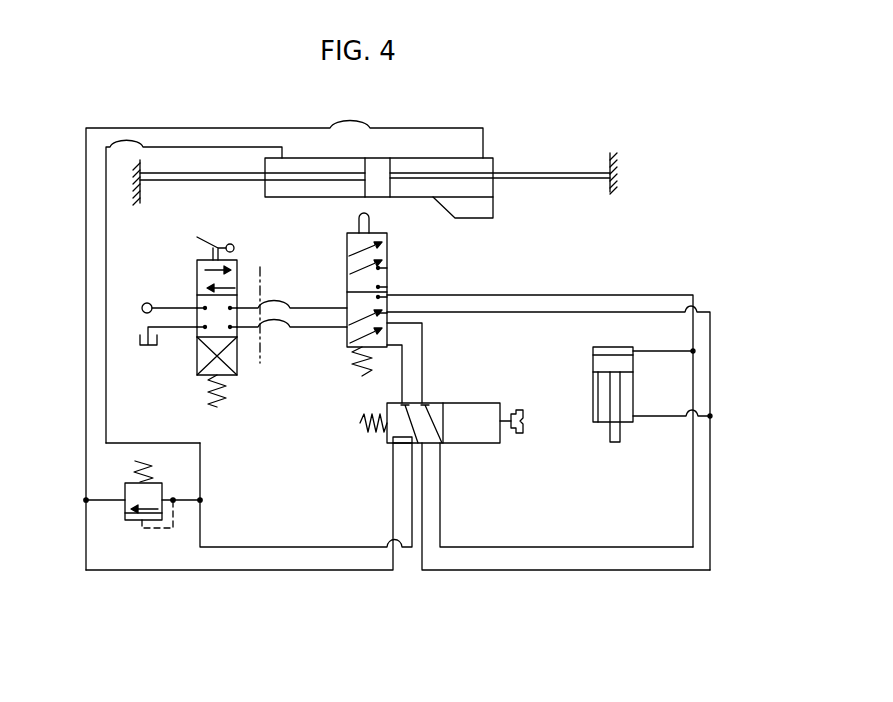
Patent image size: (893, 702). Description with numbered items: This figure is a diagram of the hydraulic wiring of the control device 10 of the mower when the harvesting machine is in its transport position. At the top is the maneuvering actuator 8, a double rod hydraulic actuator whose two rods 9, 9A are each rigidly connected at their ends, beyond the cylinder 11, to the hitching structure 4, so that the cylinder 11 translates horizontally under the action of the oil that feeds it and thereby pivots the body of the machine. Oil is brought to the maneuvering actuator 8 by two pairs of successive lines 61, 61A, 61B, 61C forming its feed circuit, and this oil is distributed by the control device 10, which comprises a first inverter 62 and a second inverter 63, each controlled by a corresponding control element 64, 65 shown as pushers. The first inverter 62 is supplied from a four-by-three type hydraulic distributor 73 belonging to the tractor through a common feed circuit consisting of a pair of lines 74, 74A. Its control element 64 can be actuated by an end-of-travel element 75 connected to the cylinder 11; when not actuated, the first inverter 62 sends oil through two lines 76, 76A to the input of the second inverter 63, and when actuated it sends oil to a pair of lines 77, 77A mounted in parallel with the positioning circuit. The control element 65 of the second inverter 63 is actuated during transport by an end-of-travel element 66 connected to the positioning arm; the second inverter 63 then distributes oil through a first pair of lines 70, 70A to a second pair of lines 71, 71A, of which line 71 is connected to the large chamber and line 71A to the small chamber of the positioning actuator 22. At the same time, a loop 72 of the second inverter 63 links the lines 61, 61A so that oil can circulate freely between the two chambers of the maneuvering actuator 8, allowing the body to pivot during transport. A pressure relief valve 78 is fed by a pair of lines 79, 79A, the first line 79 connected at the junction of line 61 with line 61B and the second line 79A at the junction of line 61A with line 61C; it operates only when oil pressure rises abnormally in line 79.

The hitching structure 4 is at (140, 196).
The maneuvering actuator 8 is at (493, 160).
The rod 9 is at (228, 181).
The rod 9A is at (585, 179).
The control device 10 is at (300, 431).
The cylinder 11 is at (283, 198).
The positioning actuator 22 is at (620, 346).
The line 61 is at (267, 546).
The line 61A is at (298, 569).
The line 61B is at (190, 443).
The line 61C is at (86, 420).
The first inverter 62 is at (347, 347).
The second inverter 63 is at (501, 403).
The control element 64 is at (372, 312).
The control element 65 is at (424, 419).
The end-of-travel element 66 is at (524, 426).
The line 70 is at (548, 546).
The line 70A is at (575, 570).
The line 71 is at (652, 392).
The line 71A is at (660, 430).
The loop 72 is at (387, 446).
The hydraulic distributor 73 is at (197, 372).
The line 74 is at (302, 302).
The line 74A is at (302, 337).
The end-of-travel element 75 is at (493, 205).
The line 76 is at (422, 343).
The line 76A is at (400, 372).
The line 77 is at (553, 294).
The line 77A is at (555, 315).
The pressure relief valve 78 is at (125, 490).
The line 79 is at (183, 497).
The line 79A is at (108, 507).